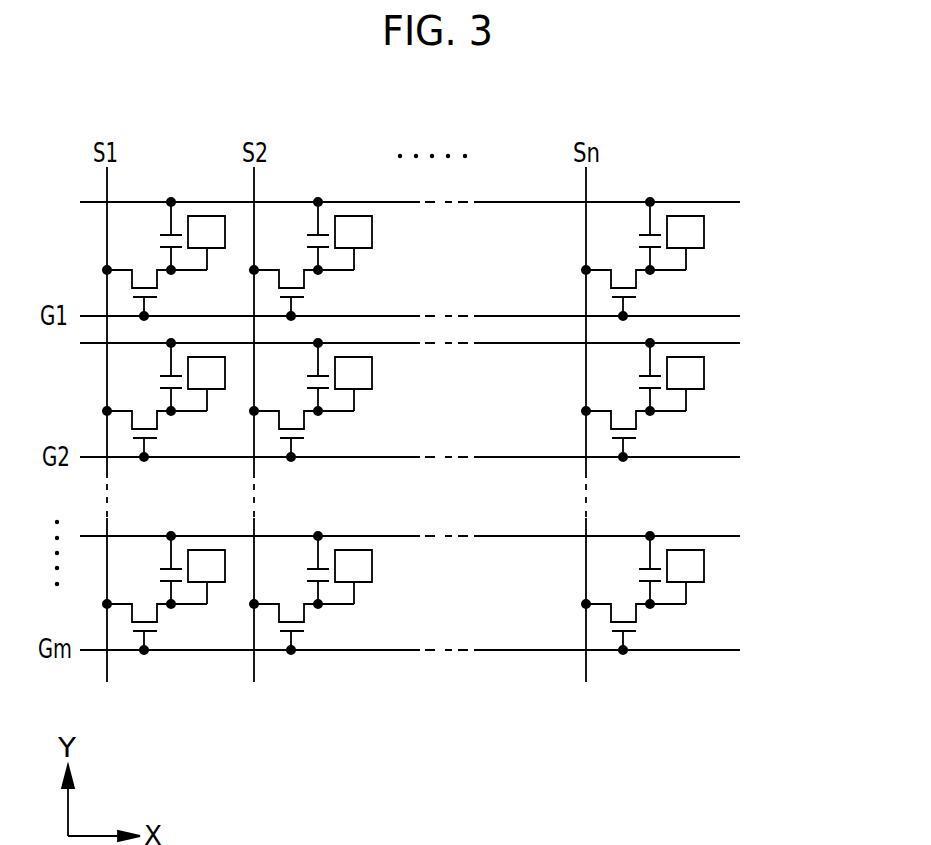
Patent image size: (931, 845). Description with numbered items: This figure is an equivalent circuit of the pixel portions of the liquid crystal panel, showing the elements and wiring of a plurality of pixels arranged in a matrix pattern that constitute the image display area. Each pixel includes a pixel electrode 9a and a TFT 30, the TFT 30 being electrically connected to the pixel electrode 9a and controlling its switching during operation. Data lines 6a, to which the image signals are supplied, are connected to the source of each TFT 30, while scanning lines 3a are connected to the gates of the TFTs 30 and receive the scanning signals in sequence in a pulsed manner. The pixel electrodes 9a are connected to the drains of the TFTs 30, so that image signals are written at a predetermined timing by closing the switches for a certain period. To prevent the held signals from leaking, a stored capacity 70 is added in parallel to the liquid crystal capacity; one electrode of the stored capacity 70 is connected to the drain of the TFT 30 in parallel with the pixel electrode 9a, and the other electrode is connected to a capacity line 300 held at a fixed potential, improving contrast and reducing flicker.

The data line 6a is at (107, 182).
The capacity line 300 is at (725, 204).
The scanning line 3a is at (723, 316).
The pixel electrode 9a is at (700, 237).
The stored capacity 70 is at (158, 243).
The TFT 30 is at (123, 283).